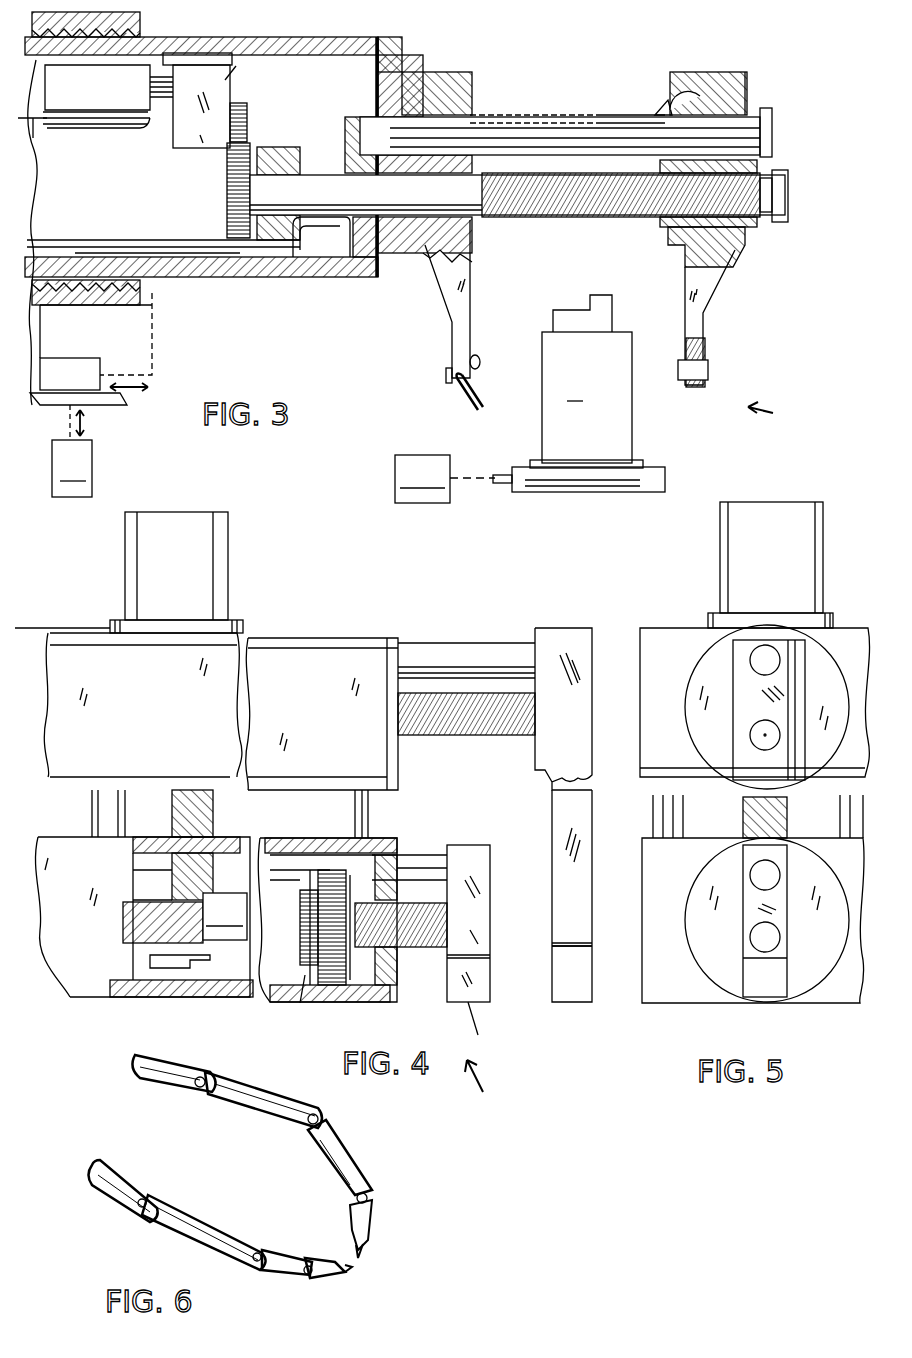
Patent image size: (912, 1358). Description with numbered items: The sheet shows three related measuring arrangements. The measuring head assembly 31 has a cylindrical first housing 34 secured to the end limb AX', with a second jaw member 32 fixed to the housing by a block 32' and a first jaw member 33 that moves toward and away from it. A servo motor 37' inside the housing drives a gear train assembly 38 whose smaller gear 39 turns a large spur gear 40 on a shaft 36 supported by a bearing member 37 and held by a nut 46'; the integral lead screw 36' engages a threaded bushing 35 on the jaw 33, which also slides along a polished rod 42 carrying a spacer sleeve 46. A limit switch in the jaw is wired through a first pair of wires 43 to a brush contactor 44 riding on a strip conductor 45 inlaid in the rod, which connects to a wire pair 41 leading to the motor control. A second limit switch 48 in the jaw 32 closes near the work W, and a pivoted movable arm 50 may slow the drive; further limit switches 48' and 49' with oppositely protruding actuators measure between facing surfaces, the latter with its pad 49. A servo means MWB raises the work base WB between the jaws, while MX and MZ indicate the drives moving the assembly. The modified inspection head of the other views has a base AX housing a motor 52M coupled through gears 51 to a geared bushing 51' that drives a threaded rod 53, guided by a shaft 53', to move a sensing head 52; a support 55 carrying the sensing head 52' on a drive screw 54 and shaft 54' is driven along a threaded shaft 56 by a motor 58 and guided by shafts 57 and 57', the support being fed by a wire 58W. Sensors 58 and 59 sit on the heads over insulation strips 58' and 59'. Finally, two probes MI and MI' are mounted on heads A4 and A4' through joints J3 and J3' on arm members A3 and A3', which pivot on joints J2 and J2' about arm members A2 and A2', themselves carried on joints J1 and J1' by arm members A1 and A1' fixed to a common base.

In FIG. 3, the measuring head assembly 31 is at (773, 413).
In FIG. 3, the second jaw member 32 is at (424, 207).
In FIG. 3, the block 32' is at (248, 76).
In FIG. 3, the first jaw member 33 is at (713, 209).
In FIG. 3, the first housing 34 is at (345, 277).
In FIG. 3, the threaded bushing 35 is at (668, 227).
In FIG. 3, the shaft 36 is at (517, 216).
In FIG. 3, the lead screw 36' is at (635, 218).
In FIG. 3, the bearing member 37 is at (287, 182).
In FIG. 3, the servo motor 37' is at (83, 123).
In FIG. 3, the gear train assembly 38 is at (200, 115).
In FIG. 3, the smaller gear 39 is at (247, 110).
In FIG. 3, the large spur gear 40 is at (227, 180).
In FIG. 3, the wire pair 41 is at (120, 247).
In FIG. 3, the rod 42 is at (748, 130).
In FIG. 3, the first pair of wires 43 is at (700, 72).
In FIG. 3, the brush contactor 44 is at (660, 100).
In FIG. 3, the strip conductor 45 is at (612, 115).
In FIG. 3, the spacer sleeve 46 is at (535, 102).
In FIG. 3, the nut 46' is at (347, 126).
In FIG. 3, the second limit switch 48 is at (491, 344).
In FIG. 3, the limit switch 48' is at (425, 382).
In FIG. 3, the gripper pad 49 is at (690, 373).
In FIG. 3, the limit switch 49' is at (721, 352).
In FIG. 3, the movable arm 50 is at (482, 408).
In FIG. 4, the movable arm 50 is at (486, 1085).
In FIG. 4, the gears 51 is at (327, 933).
In FIG. 5, the gears 51 is at (746, 829).
In FIG. 4, the geared bushing 51' is at (319, 948).
In FIG. 4, the sensing head 52 is at (487, 923).
In FIG. 5, the sensing head 52 is at (754, 944).
In FIG. 4, the sensing head 52' is at (565, 681).
In FIG. 5, the sensing head 52' is at (733, 673).
In FIG. 4, the motor 52M is at (185, 918).
In FIG. 4, the threaded rod 53 is at (401, 952).
In FIG. 4, the shaft 53' is at (415, 847).
In FIG. 4, the drive screw 54 is at (466, 805).
In FIG. 5, the drive screw 54 is at (812, 691).
In FIG. 4, the shaft 54' is at (466, 630).
In FIG. 4, the support 55 is at (345, 640).
In FIG. 4, the threaded shaft 56 is at (213, 800).
In FIG. 5, the threaded shaft 56 is at (743, 822).
In FIG. 4, the shaft 57 is at (140, 735).
In FIG. 5, the shaft 57 is at (736, 825).
In FIG. 4, the shaft 57' is at (386, 814).
In FIG. 4, the sensor 58 is at (484, 1025).
In FIG. 5, the sensor 58 is at (770, 547).
In FIG. 4, the insulation strip 58' is at (490, 957).
In FIG. 4, the wire 58W is at (72, 628).
In FIG. 4, the sensor 59 is at (572, 990).
In FIG. 5, the sensor 59 is at (784, 966).
In FIG. 4, the insulation strip 59' is at (595, 896).
In FIG. 3, the work W is at (586, 381).
In FIG. 3, the work base WB is at (632, 492).
In FIG. 3, the servo operated means MWB is at (453, 479).
In FIG. 3, the x-axis motor MX is at (89, 381).
In FIG. 3, the z-axis motor MZ is at (72, 451).
In FIG. 4, the base AX is at (144, 939).
In FIG. 3, the end limb AX' is at (96, 334).
In FIG. 6, the arm member A1 is at (123, 1179).
In FIG. 6, the arm member A2 is at (204, 1226).
In FIG. 6, the second arm member A3 is at (283, 1243).
In FIG. 6, the head A4 is at (322, 1250).
In FIG. 6, the joint 1 J1 is at (151, 1235).
In FIG. 6, the joint assembly J2 is at (262, 1282).
In FIG. 6, the joint J3 is at (314, 1291).
In FIG. 6, the surface sensing probe MI is at (365, 1284).
In FIG. 6, the arm member A1' is at (175, 1063).
In FIG. 6, the arm member A2' is at (263, 1096).
In FIG. 6, the second arm member A3' is at (357, 1157).
In FIG. 6, the head A4' is at (389, 1225).
In FIG. 6, the joint 1 J1' is at (234, 1058).
In FIG. 6, the joint assembly J2' is at (354, 1100).
In FIG. 6, the joint J3' is at (399, 1188).
In FIG. 6, the surface sensing probe MI' is at (386, 1258).